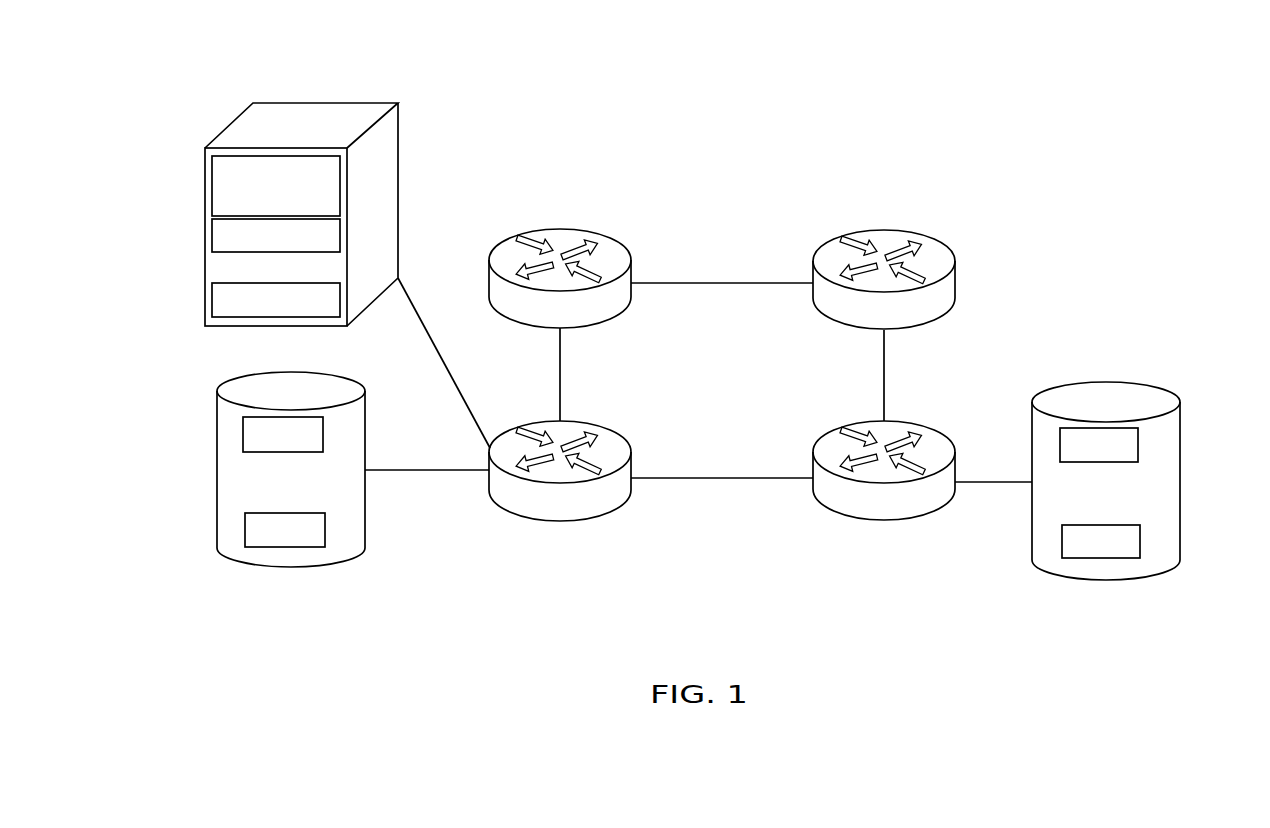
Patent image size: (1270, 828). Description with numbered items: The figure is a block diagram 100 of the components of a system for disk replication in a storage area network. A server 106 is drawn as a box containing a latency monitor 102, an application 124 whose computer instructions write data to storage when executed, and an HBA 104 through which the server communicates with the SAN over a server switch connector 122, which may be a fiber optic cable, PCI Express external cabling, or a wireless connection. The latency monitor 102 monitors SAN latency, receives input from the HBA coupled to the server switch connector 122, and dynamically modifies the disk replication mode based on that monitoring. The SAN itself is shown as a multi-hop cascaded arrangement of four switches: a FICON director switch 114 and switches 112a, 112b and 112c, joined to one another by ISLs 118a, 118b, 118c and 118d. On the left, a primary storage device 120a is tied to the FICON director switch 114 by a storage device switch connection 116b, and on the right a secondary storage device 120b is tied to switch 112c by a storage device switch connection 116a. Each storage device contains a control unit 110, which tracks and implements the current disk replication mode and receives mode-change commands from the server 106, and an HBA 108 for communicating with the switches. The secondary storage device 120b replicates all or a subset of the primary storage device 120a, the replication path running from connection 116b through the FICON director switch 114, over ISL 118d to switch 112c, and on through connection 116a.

The block diagram 100 is at (1036, 117).
The latency monitor 102 is at (205, 178).
The HBA 104 is at (205, 298).
The server 106 is at (327, 115).
The HBA 108 is at (243, 533).
The control unit 110 is at (242, 433).
The switch 112a is at (558, 235).
The switch 112b is at (885, 238).
The switch 112c is at (912, 512).
The FICON director switch 114 is at (615, 500).
The storage device switch connection 116a is at (985, 485).
The storage device switch connection 116b is at (412, 473).
The ISL 118a is at (560, 387).
The ISL 118b is at (733, 287).
The ISL 118c is at (884, 390).
The ISL 118d is at (732, 482).
The primary storage device 120a is at (368, 543).
The secondary storage device 120b is at (1182, 555).
The server switch connector 122 is at (457, 388).
The application 124 is at (205, 233).